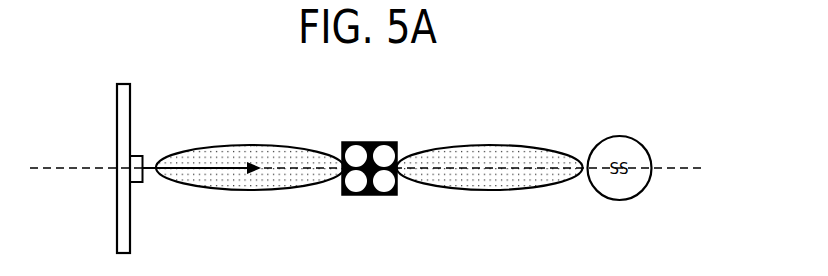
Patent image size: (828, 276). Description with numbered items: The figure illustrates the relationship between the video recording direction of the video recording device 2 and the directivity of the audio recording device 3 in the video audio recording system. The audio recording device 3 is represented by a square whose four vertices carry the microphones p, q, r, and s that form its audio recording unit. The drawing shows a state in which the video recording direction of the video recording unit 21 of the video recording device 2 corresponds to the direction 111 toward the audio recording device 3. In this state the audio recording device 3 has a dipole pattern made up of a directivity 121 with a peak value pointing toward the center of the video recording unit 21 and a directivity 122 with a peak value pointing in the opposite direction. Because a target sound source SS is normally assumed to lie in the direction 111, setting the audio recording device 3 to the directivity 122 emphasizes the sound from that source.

The video recording device 2 is at (117, 121).
The video recording unit 21 is at (136, 156).
The direction 111 is at (205, 170).
The directivity 121 is at (278, 145).
The audio recording device 3 is at (375, 142).
The directivity 122 is at (489, 145).